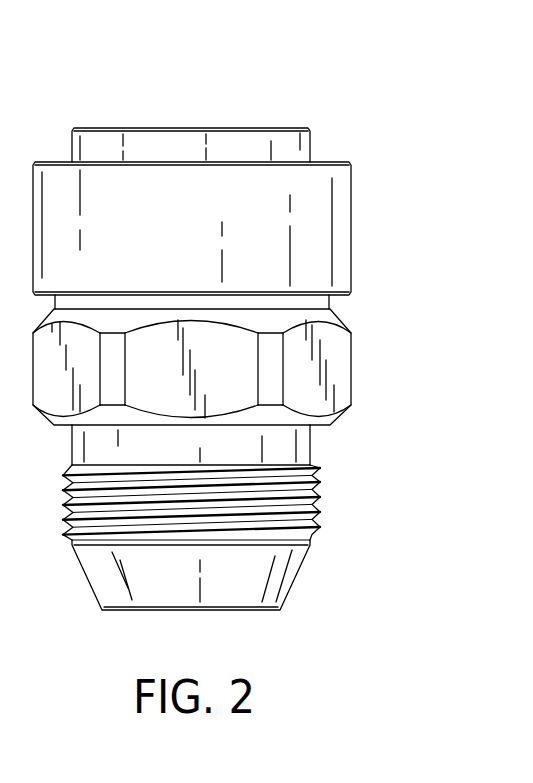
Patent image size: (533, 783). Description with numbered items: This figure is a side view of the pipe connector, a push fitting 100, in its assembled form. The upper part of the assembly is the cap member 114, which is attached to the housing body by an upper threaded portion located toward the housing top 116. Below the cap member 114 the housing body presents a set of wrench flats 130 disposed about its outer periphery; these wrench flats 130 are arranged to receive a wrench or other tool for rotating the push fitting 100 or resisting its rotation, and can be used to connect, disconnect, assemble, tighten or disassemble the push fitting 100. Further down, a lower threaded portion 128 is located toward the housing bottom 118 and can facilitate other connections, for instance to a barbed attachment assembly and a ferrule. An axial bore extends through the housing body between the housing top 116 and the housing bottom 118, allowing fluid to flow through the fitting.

The push fitting 100 is at (223, 350).
The cap member 114 is at (356, 216).
The housing top 116 is at (95, 122).
The housing bottom 118 is at (276, 616).
The lower threaded portion 128 is at (317, 496).
The wrench flats 130 is at (340, 371).